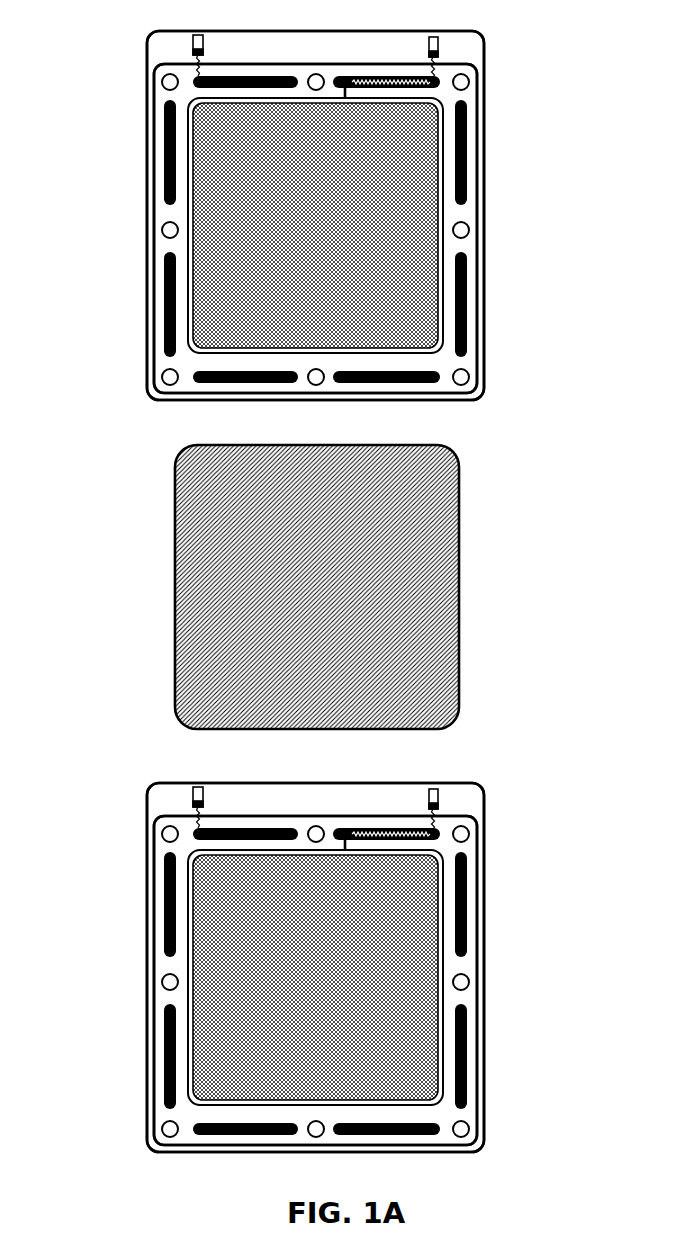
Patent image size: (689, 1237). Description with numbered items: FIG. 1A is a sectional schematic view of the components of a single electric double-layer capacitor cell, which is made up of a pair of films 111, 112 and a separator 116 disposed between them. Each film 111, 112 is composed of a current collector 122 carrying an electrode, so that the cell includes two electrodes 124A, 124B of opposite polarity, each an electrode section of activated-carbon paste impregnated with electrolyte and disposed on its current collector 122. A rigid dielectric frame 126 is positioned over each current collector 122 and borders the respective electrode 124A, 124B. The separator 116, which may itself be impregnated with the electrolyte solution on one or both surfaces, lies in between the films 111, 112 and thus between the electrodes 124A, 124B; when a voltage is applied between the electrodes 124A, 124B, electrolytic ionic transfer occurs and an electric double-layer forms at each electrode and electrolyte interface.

The film 111 is at (143, 70).
The film 112 is at (143, 825).
The separator 116 is at (170, 483).
The current collector 122 is at (477, 52).
The electrode 124A is at (340, 222).
The electrode 124B is at (315, 977).
The rigid dielectric frame 126 is at (476, 214).